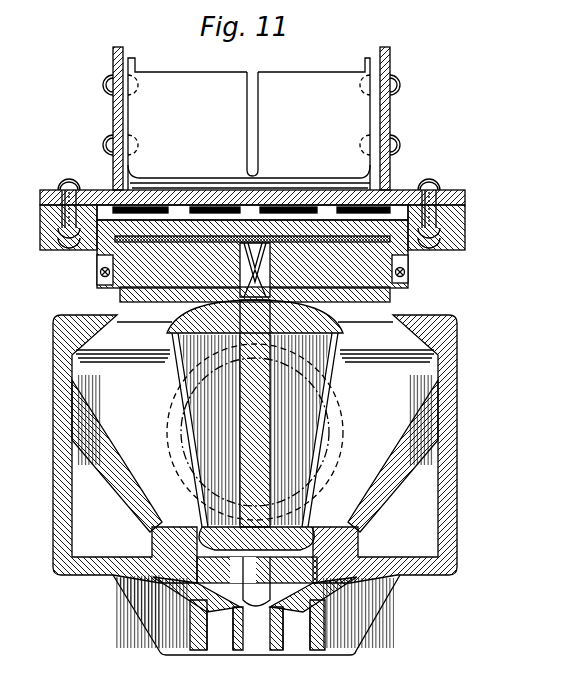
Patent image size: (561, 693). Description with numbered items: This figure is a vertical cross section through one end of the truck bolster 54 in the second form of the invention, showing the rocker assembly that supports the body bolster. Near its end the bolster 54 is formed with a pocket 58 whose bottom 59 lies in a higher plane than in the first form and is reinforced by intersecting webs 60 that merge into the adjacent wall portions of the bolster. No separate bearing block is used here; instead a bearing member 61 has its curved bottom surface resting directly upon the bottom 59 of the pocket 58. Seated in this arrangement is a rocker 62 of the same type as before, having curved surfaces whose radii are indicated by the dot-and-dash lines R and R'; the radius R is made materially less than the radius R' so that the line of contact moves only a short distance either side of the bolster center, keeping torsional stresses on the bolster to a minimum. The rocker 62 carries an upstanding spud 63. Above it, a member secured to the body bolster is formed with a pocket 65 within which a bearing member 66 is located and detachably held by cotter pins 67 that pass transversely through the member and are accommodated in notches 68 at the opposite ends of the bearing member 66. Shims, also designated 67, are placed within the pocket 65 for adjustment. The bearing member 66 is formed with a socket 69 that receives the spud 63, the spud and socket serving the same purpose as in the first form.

The bolster 54 is at (457, 355).
The pocket 58 is at (405, 397).
The bottom 59 is at (200, 600).
The intersecting webs 60 is at (228, 655).
The bearing member 61 is at (320, 560).
The rocker 62 is at (255, 441).
The spud 63 is at (255, 413).
The pocket 65 is at (408, 250).
The bearing member 66 is at (122, 302).
The cotter pins 67 is at (105, 275).
The notches 68 is at (100, 262).
The socket 69 is at (230, 335).
The radius R is at (226, 487).
The radius R' is at (296, 410).